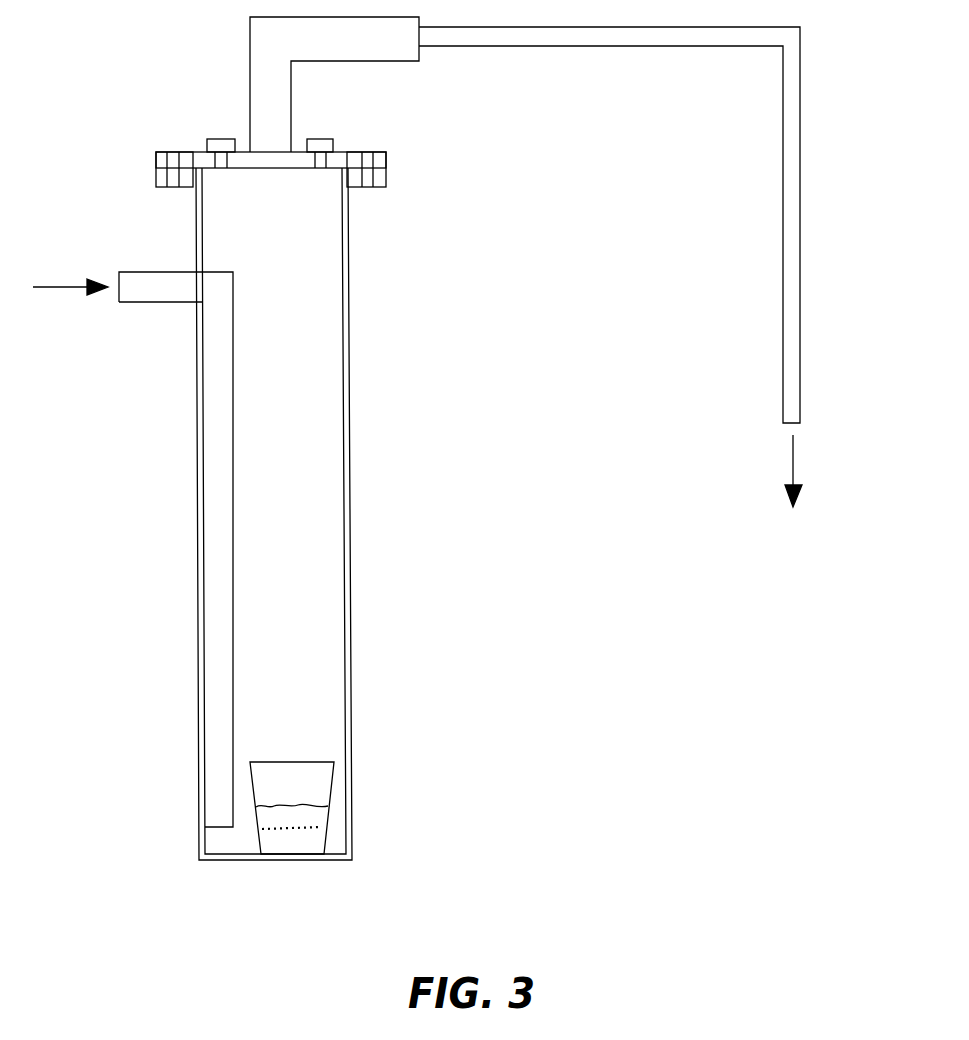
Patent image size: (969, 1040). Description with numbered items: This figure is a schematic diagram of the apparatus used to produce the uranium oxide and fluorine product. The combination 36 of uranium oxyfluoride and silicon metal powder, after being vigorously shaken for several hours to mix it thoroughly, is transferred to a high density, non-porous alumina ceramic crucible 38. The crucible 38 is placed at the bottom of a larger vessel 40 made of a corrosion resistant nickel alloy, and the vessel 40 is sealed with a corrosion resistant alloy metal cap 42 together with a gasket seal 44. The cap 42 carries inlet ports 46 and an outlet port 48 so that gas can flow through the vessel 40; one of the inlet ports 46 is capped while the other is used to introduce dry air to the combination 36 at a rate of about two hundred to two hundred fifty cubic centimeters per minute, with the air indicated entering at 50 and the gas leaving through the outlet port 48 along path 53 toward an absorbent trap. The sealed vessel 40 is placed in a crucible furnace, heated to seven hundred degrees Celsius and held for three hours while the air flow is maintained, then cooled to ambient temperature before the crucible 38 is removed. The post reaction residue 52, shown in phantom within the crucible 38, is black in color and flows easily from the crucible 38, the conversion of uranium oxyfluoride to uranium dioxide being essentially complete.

The combination 36 is at (318, 816).
The ceramic crucible 38 is at (318, 774).
The vessel 40 is at (351, 641).
The metal cap 42 is at (386, 151).
The gasket seal 44 is at (388, 166).
The inlet ports 46 is at (221, 139).
The outlet port 48 is at (250, 43).
The air inlet tube 50 is at (133, 539).
The post reaction residue 52 is at (308, 841).
The outlet flow to absorbent trap 53 is at (793, 516).